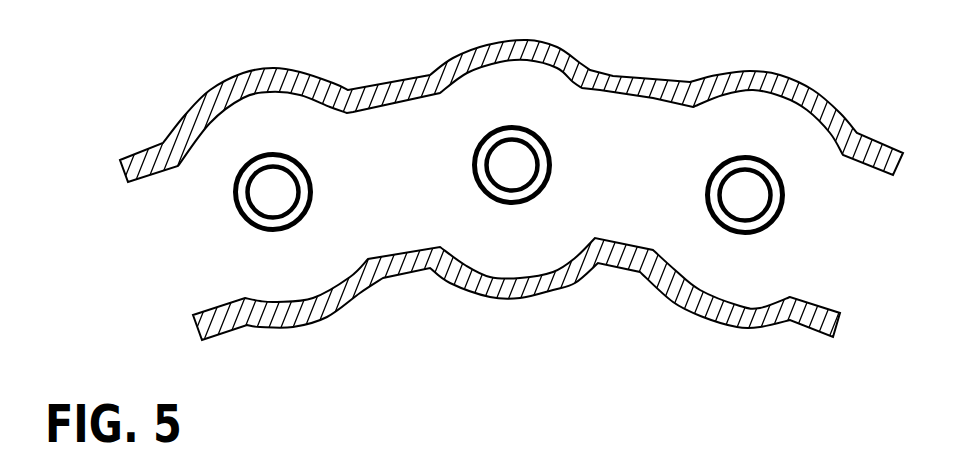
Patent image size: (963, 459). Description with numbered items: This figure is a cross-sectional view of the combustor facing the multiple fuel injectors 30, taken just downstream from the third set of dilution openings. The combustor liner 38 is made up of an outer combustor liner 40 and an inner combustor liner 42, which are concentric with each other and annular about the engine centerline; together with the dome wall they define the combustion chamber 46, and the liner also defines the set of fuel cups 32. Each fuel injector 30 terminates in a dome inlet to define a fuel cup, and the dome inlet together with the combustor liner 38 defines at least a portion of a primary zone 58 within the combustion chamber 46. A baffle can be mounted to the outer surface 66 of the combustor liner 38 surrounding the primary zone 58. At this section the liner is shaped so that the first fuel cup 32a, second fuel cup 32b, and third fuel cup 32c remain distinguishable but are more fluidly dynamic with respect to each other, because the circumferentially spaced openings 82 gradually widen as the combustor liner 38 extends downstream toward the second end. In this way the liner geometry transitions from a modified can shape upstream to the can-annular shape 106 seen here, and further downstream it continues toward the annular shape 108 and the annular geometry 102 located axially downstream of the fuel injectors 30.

The fuel injector 30 is at (245, 215).
The set of fuel cups 32 is at (814, 229).
The first fuel cup 32a is at (250, 138).
The second fuel cup 32b is at (500, 105).
The third fuel cup 32c is at (742, 138).
The combustor liner 38 is at (350, 282).
The outer combustor liner 40 is at (580, 62).
The inner combustor liner 42 is at (731, 315).
The combustion chamber 46 is at (610, 180).
The primary zone 58 is at (396, 178).
The outer surface 66 is at (678, 297).
The circumferentially spaced openings 82 is at (180, 225).
The annular geometry 102 is at (846, 456).
The can-annular shape 106 is at (533, 40).
The annular shape 108 is at (532, 452).